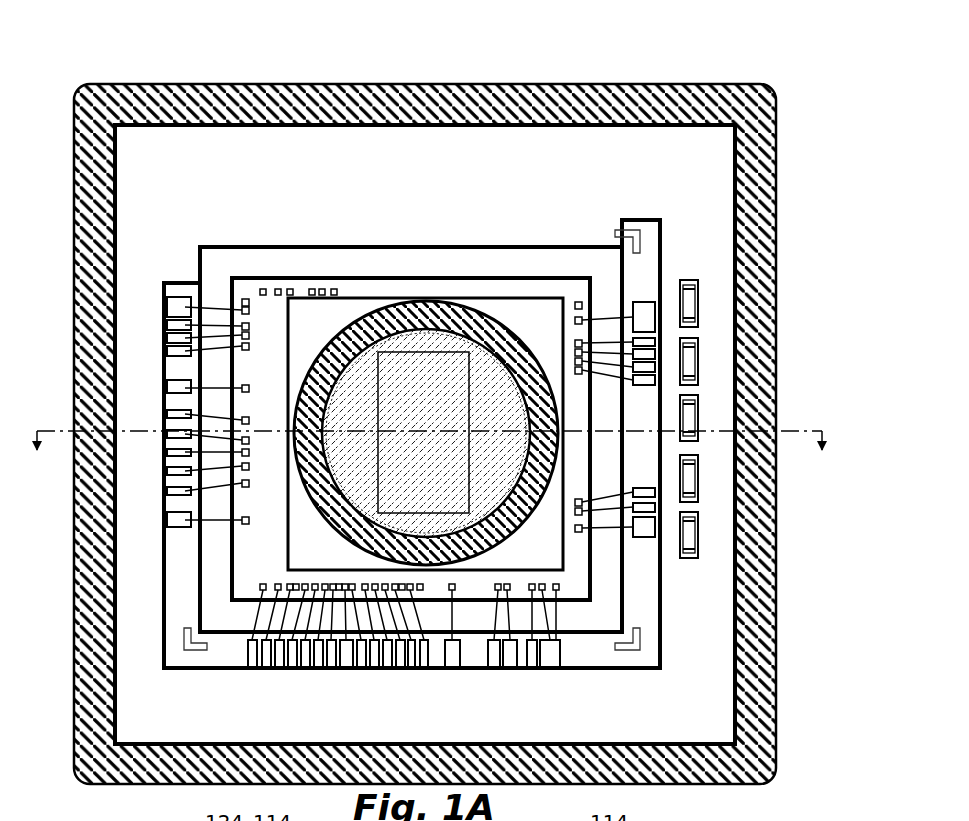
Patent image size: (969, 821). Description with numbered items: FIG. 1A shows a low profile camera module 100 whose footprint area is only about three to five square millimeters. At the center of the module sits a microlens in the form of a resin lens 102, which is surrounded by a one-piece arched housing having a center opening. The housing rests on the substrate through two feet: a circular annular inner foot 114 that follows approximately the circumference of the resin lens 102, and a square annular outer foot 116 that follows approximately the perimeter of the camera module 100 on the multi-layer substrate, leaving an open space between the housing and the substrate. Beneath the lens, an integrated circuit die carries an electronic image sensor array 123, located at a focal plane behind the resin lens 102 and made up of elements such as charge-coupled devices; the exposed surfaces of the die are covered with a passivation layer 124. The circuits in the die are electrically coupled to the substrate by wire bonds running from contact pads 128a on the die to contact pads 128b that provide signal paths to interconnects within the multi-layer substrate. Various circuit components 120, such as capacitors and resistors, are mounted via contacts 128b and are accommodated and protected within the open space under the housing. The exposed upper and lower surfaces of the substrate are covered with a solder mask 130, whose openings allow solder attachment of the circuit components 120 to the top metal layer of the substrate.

The low profile camera module 100 is at (680, 56).
The resin lens 102 is at (436, 342).
The circular annular inner foot 114 is at (528, 520).
The square annular outer foot 116 is at (776, 632).
The circuit components 120 is at (690, 531).
The electronic image sensor array 123 is at (378, 387).
The passivation layer 124 is at (553, 325).
The contact pads on the die 128a is at (576, 320).
The contact pads on the substrate 128b is at (180, 518).
The solder mask 130 is at (190, 704).